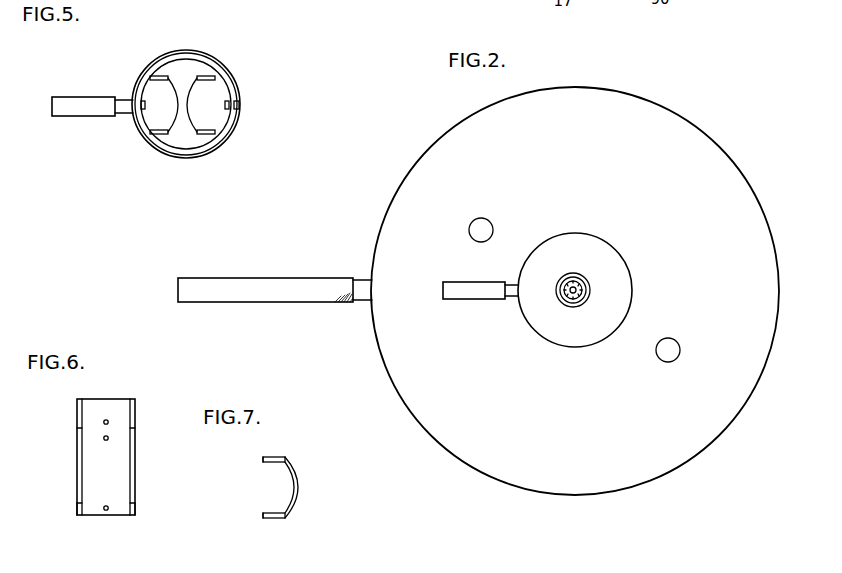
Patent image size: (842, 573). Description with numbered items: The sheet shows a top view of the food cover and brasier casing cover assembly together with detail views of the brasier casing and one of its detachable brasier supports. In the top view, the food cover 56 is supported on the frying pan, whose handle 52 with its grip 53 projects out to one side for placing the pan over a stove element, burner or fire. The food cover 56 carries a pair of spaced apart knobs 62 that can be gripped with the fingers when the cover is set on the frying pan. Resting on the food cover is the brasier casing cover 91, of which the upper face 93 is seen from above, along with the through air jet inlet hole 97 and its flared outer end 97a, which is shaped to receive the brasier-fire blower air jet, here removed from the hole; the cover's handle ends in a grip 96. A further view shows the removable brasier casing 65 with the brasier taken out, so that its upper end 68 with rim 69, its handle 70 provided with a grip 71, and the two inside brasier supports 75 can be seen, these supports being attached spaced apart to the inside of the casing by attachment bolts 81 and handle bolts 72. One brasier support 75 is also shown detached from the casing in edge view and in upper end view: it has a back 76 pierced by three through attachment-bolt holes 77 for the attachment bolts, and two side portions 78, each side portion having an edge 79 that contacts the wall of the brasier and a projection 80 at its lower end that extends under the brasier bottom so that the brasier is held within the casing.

In FIG. 2, the handle 52 is at (362, 277).
In FIG. 2, the grip 53 is at (283, 276).
In FIG. 2, the food cover 56 is at (682, 119).
In FIG. 2, the knobs 62 is at (476, 219).
In FIG. 5, the brasier casing 65 is at (193, 50).
In FIG. 5, the upper end 68 is at (165, 152).
In FIG. 5, the rim 69 is at (200, 153).
In FIG. 5, the handle 70 is at (120, 116).
In FIG. 2, the handle 70 is at (510, 300).
In FIG. 5, the grip 71 is at (82, 96).
In FIG. 2, the grip 71 is at (462, 302).
In FIG. 5, the handle bolts 72 is at (152, 104).
In FIG. 6, the brasier support 75 is at (77, 411).
In FIG. 7, the brasier support 75 is at (297, 468).
In FIG. 6, the back 76 is at (91, 405).
In FIG. 7, the back 76 is at (302, 487).
In FIG. 6, the attachment-bolt holes 77 is at (107, 414).
In FIG. 5, the side portions 78 is at (158, 72).
In FIG. 6, the side portions 78 is at (77, 455).
In FIG. 7, the side portions 78 is at (280, 455).
In FIG. 6, the edge 79 is at (77, 477).
In FIG. 5, the projection 80 is at (182, 105).
In FIG. 6, the projection 80 is at (77, 508).
In FIG. 7, the projection 80 is at (262, 460).
In FIG. 5, the attachment bolts 81 is at (241, 105).
In FIG. 2, the brasier casing cover 91 is at (562, 243).
In FIG. 2, the upper face 93 is at (593, 262).
In FIG. 2, the grip 96 is at (567, 298).
In FIG. 2, the air jet inlet hole 97 is at (587, 289).
In FIG. 2, the flared outer end 97a is at (577, 297).